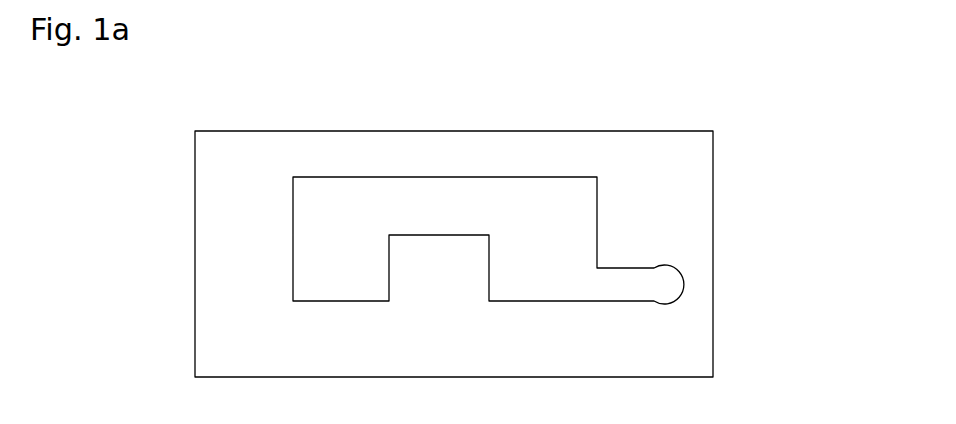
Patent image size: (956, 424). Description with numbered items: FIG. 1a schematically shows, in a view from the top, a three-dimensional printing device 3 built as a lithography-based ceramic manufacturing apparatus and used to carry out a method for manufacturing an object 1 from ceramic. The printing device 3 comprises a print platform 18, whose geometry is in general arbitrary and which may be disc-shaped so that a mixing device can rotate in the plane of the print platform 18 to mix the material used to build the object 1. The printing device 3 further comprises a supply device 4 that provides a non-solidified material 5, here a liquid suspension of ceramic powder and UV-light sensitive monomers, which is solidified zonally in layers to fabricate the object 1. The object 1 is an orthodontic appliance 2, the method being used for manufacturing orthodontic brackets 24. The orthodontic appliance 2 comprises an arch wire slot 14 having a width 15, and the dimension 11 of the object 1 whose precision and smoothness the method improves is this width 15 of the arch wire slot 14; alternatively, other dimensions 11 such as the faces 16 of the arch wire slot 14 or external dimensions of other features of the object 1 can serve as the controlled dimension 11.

The object 1 is at (568, 228).
The orthodontic appliance 2 is at (568, 228).
The orthodontic brackets 24 is at (577, 200).
The 3D-printing device 3 is at (391, 254).
The supply device 4 is at (391, 254).
The non-solidified material 5 is at (225, 191).
The dimension 11 is at (487, 263).
The arch wire slot 14 is at (409, 278).
The width 15 is at (428, 237).
The faces 16 is at (386, 267).
The print platform 18 is at (260, 351).